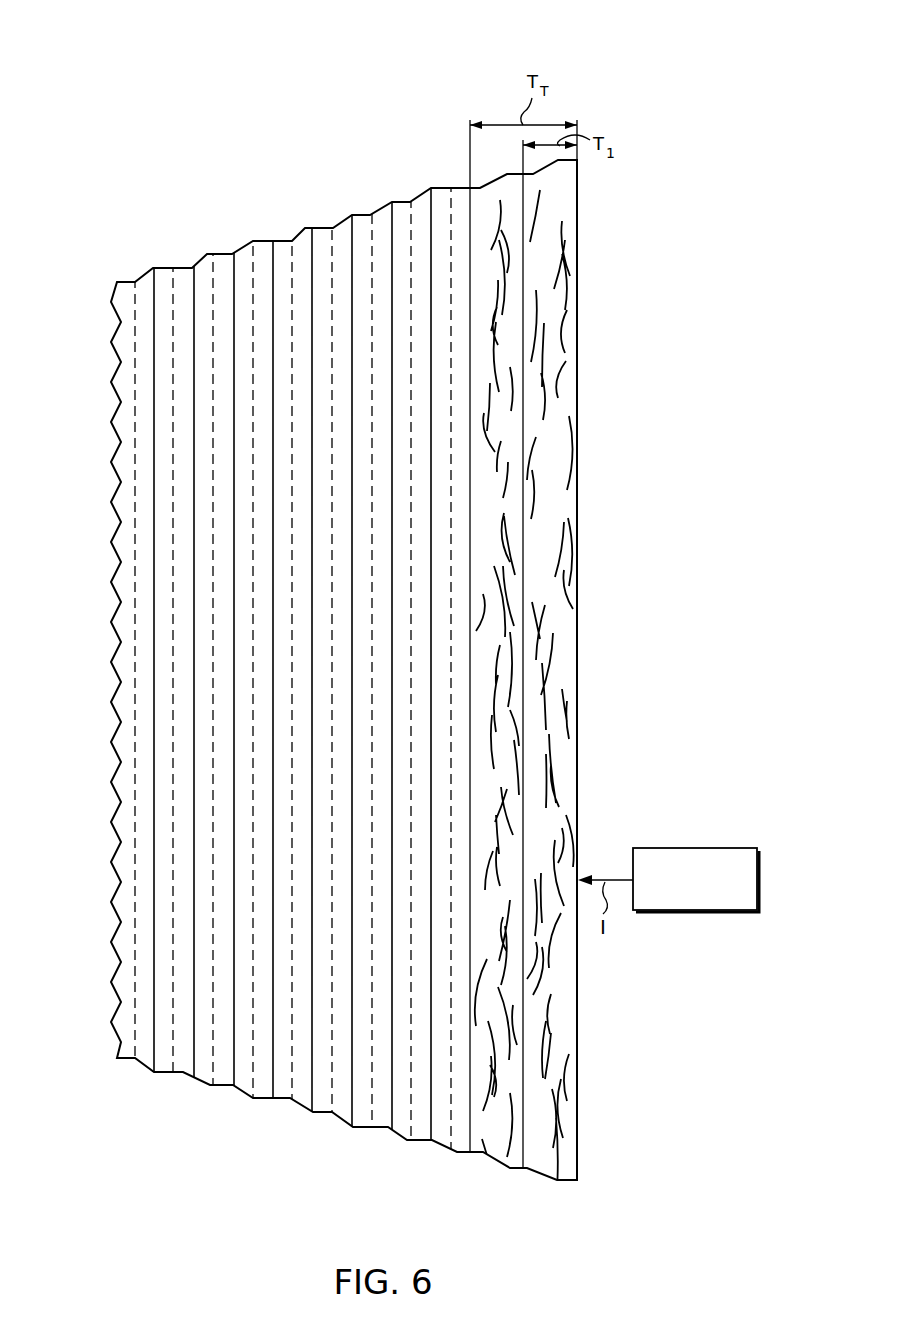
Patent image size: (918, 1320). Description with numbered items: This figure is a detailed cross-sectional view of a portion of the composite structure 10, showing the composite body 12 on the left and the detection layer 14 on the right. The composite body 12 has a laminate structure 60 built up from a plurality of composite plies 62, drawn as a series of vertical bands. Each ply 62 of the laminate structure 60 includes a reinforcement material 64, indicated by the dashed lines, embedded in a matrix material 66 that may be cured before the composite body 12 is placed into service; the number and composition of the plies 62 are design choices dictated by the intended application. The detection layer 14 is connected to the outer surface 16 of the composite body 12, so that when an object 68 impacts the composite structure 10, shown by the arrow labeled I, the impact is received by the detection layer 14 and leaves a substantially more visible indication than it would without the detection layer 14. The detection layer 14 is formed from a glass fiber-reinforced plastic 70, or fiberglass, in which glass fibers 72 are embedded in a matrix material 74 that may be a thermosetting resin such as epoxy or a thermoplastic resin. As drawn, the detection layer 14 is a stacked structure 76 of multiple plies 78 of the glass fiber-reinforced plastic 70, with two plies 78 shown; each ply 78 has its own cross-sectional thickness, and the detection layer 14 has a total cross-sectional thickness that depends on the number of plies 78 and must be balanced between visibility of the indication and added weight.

The composite structure 10 is at (674, 114).
The composite body 12 is at (263, 609).
The detection layer 14 is at (540, 615).
The outer surface 16 is at (470, 535).
The laminate structure 60 is at (467, 1195).
The composite plies 62 is at (150, 1073).
The reinforcement material 64 is at (173, 500).
The matrix material 66 is at (222, 376).
The object 68 is at (694, 848).
The glass fiber-reinforced plastic 70 is at (575, 208).
The glass fibers 72 is at (530, 287).
The matrix material 74 is at (545, 343).
The stacked structure 76 is at (578, 1195).
The plies 78 is at (482, 1152).